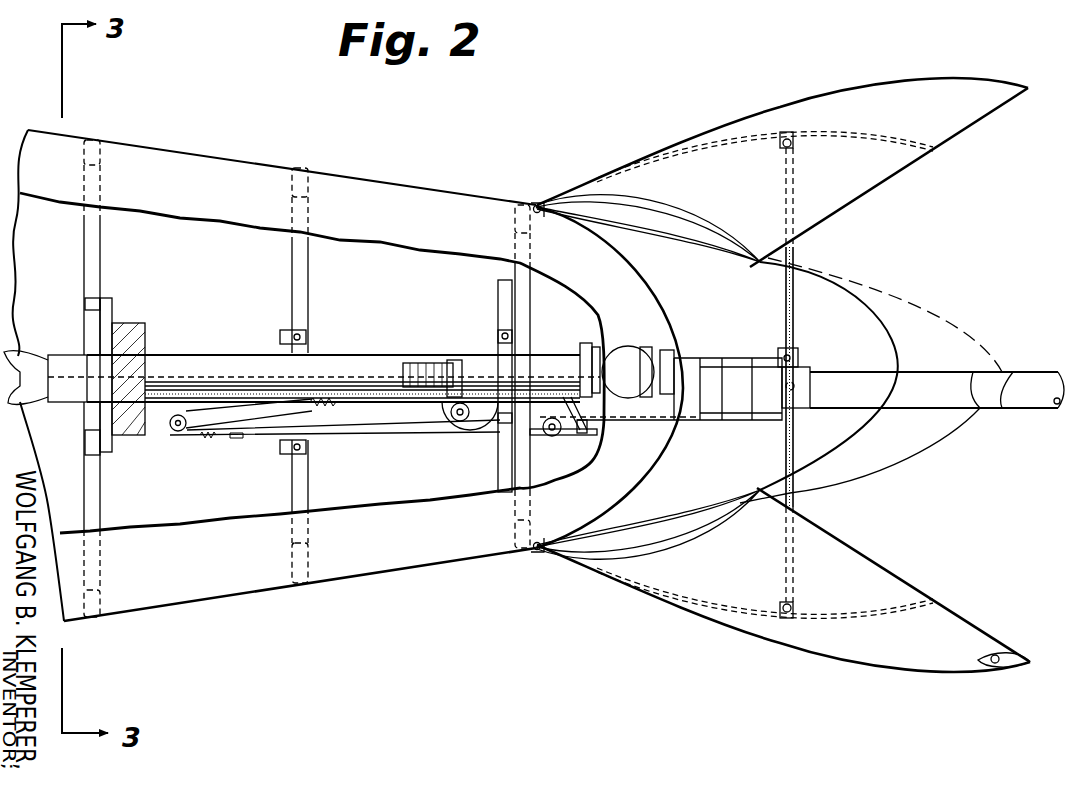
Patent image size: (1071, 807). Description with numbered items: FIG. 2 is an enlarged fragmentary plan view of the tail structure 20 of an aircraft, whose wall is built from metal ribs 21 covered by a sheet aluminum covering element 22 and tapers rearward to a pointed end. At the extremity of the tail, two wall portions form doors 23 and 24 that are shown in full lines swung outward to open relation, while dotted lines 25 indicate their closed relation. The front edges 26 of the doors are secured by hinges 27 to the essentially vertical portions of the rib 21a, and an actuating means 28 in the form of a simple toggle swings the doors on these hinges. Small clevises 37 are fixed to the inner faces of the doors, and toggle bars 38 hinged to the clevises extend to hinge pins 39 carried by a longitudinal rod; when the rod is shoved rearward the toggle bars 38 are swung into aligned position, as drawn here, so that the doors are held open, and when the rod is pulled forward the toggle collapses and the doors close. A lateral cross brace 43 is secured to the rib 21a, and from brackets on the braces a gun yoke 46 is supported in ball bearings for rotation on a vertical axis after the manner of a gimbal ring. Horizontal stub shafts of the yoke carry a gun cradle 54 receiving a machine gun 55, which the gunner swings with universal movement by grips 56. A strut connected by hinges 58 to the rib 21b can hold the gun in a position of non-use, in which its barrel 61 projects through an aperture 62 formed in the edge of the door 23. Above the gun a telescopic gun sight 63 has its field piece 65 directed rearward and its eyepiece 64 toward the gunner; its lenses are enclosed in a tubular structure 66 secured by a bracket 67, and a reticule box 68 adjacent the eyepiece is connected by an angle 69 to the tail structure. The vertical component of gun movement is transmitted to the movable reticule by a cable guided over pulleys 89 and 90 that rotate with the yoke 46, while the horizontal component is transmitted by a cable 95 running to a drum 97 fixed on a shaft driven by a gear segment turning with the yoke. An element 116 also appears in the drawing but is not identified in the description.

The tail structure 20 is at (357, 590).
The metal ribs 21 is at (100, 155).
The rib 21a is at (514, 218).
The rib 21b is at (297, 168).
The covering element 22 is at (375, 210).
The door 23 is at (870, 663).
The door 24 is at (905, 82).
The dotted lines 25 is at (920, 450).
The front edges 26 is at (537, 204).
The hinges 27 is at (540, 215).
The actuating means 28 is at (797, 427).
The clevises 37 is at (795, 143).
The toggle bars 38 is at (792, 255).
The hinge pins 39 is at (791, 388).
The lateral cross brace 43 is at (510, 460).
The gun yoke 46 is at (592, 434).
The gun cradle 54 is at (723, 427).
The gun 55 is at (742, 385).
The grips 56 is at (170, 433).
The hinges 58 is at (283, 332).
The barrel 61 is at (1040, 378).
The aperture 62 is at (1002, 410).
The telescopic gun sight 63 is at (357, 353).
The eyepiece 64 is at (62, 365).
The field piece 65 is at (653, 360).
The tubular structure 66 is at (328, 362).
The bracket 67 is at (500, 350).
The reticule box 68 is at (128, 355).
The angle 69 is at (107, 457).
The pulley 89 is at (579, 437).
The pulley 90 is at (551, 438).
The cable 95 is at (353, 433).
The drum 97 is at (444, 415).
The collar 116 is at (425, 360).